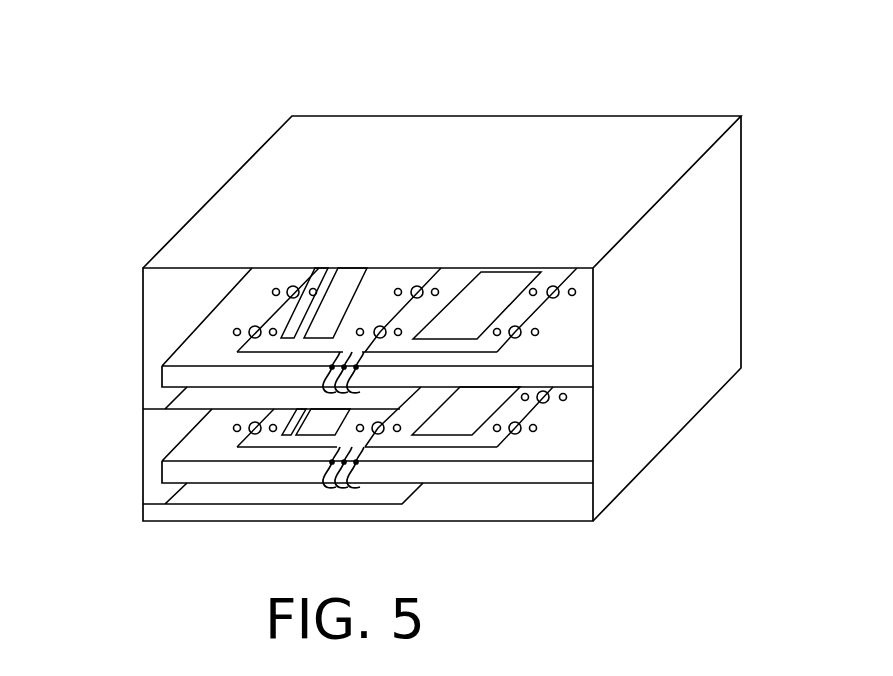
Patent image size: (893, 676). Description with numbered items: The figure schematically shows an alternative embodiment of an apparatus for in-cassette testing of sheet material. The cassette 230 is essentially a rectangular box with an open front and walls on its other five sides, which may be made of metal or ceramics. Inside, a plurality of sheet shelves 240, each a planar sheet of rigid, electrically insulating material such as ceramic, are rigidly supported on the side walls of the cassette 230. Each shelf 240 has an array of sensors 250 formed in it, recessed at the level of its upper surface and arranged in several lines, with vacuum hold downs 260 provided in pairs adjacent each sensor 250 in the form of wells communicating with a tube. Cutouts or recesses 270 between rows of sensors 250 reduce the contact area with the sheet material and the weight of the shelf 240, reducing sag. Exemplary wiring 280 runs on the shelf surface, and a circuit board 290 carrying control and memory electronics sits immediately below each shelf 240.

The cassette 230 is at (600, 116).
The sheet shelf 240 is at (161, 367).
The sensor 250 is at (252, 331).
The vacuum hold down 260 is at (276, 288).
The recess 270 is at (368, 280).
The wiring 280 is at (497, 352).
The circuit board 290 is at (163, 410).